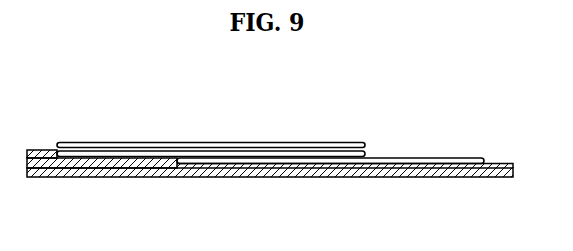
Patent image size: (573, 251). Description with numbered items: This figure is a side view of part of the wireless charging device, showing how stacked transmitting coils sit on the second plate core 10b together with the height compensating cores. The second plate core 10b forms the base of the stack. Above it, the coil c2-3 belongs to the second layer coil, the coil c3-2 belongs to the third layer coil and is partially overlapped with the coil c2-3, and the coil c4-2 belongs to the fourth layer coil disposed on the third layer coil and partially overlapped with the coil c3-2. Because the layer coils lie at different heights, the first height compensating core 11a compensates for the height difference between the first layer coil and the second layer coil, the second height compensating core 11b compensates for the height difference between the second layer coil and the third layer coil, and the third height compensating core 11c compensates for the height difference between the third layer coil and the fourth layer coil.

The second plate core 10b is at (240, 174).
The first height compensating core 11a is at (172, 164).
The second height compensating core 11b is at (102, 163).
The third height compensating core 11c is at (41, 153).
The 4-2 coil c4-2 is at (125, 143).
The 3-2 coil c3-2 is at (268, 155).
The 2-3 coil c2-3 is at (401, 161).